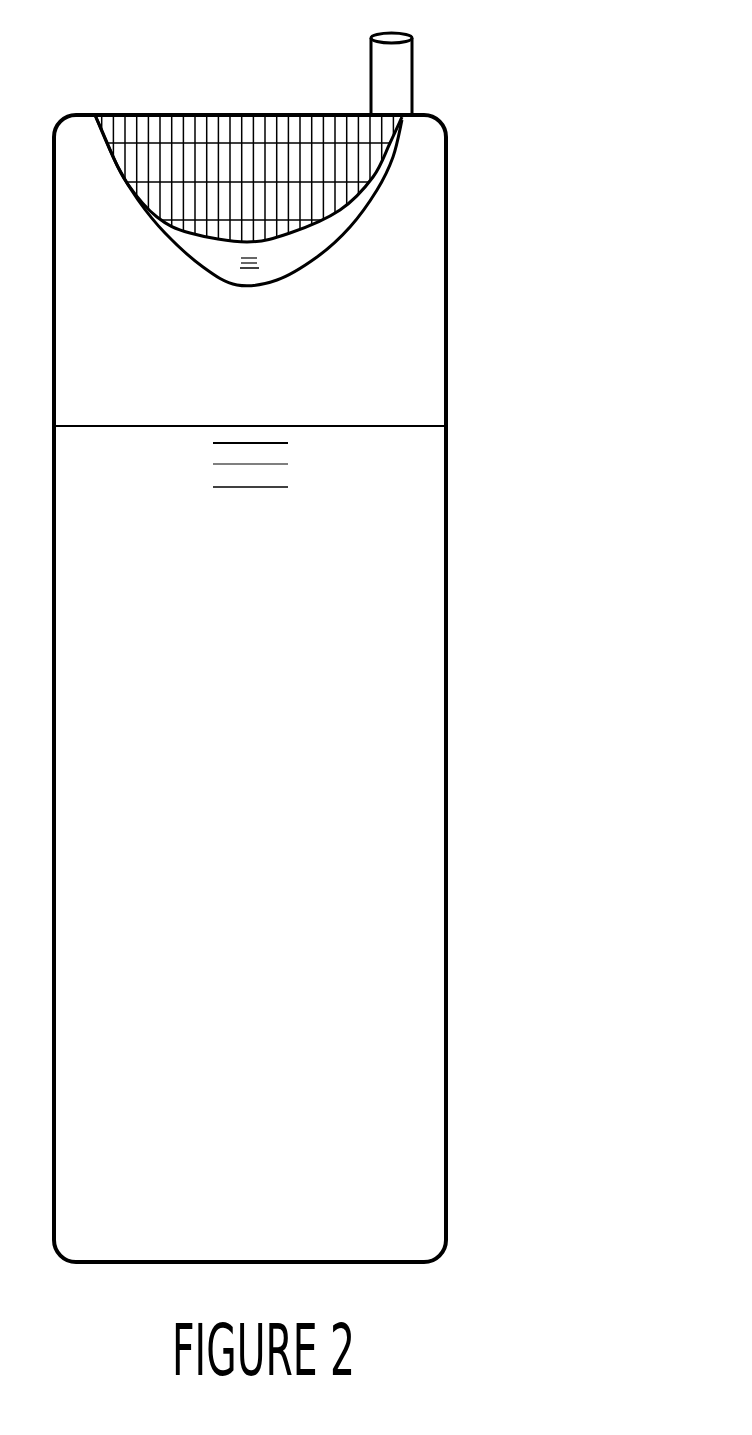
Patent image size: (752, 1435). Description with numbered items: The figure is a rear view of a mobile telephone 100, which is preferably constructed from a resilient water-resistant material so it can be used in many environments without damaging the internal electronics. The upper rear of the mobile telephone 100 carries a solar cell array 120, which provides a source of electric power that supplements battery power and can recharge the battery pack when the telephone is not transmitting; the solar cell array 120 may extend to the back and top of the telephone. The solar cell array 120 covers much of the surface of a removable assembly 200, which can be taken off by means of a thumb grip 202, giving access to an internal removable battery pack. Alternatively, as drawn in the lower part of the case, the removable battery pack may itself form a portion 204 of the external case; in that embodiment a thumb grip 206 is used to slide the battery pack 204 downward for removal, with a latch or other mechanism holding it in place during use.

The mobile telephone 100 is at (473, 80).
The solar cell array 120 is at (191, 113).
The removable assembly 200 is at (329, 230).
The thumb grip 202 is at (247, 268).
The battery pack 204 is at (393, 523).
The thumb grip 206 is at (247, 489).